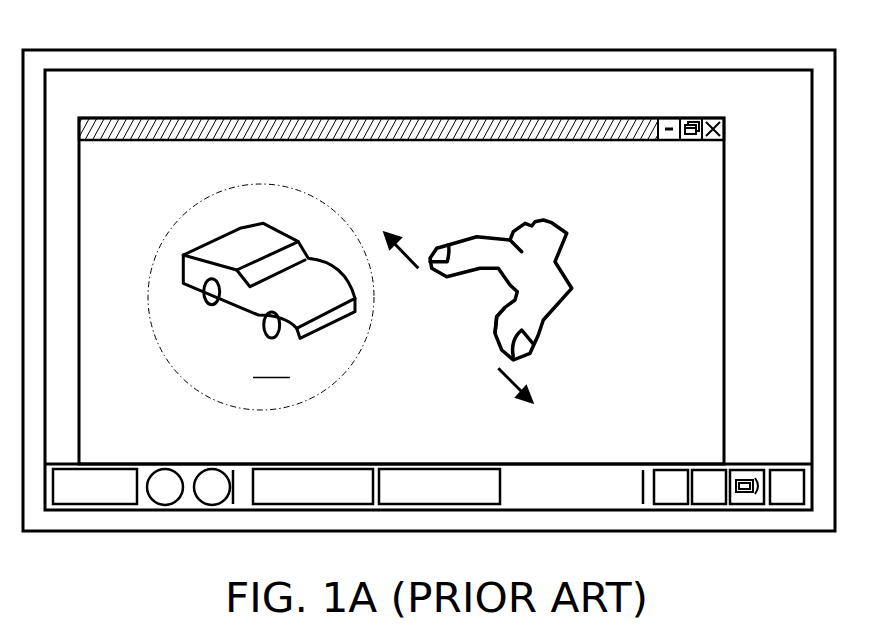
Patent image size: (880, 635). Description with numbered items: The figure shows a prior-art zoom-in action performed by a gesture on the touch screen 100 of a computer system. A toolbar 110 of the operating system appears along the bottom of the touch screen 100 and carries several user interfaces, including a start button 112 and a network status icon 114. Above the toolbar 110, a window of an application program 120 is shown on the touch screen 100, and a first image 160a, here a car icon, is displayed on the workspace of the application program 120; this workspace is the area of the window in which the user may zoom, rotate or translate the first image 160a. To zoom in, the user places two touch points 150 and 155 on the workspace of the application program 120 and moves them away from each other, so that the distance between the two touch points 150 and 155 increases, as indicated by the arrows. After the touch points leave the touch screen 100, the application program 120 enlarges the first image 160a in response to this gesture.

The touch screen 100 is at (332, 62).
The window of an application program 120 is at (138, 123).
The first image 160a is at (316, 213).
The touch point 150 is at (453, 240).
The touch point 155 is at (517, 347).
The toolbar 110 is at (608, 497).
The start button 112 is at (85, 498).
The network status icon 114 is at (762, 499).